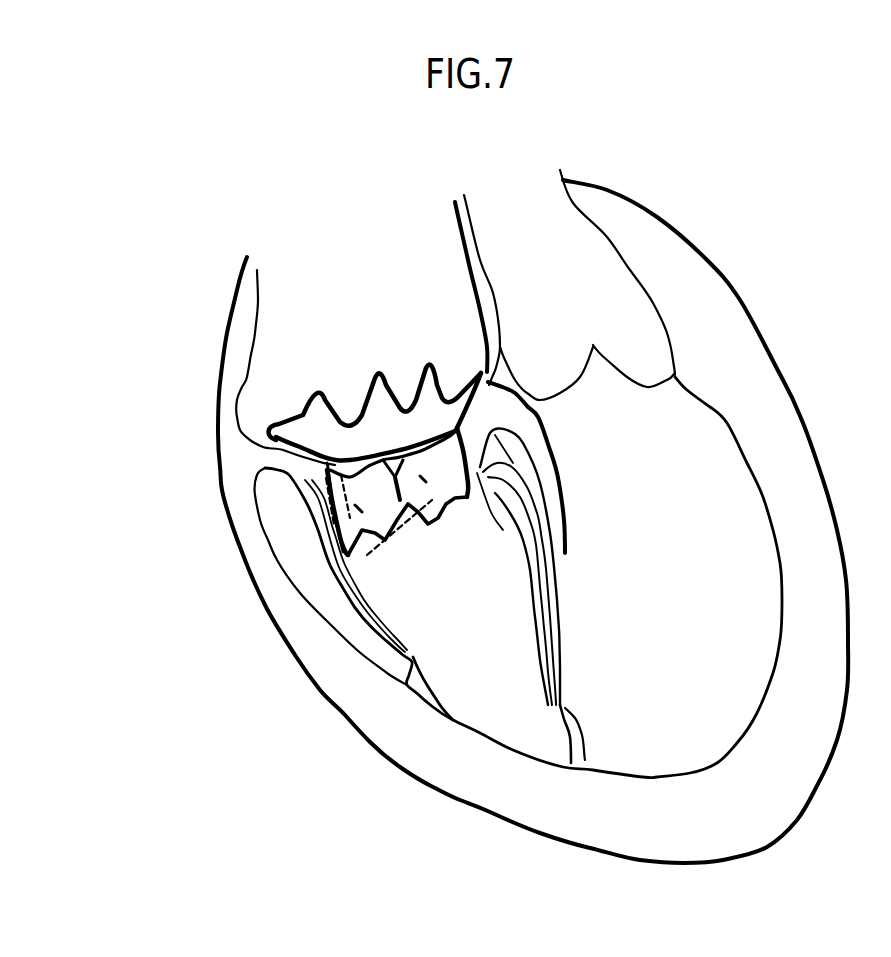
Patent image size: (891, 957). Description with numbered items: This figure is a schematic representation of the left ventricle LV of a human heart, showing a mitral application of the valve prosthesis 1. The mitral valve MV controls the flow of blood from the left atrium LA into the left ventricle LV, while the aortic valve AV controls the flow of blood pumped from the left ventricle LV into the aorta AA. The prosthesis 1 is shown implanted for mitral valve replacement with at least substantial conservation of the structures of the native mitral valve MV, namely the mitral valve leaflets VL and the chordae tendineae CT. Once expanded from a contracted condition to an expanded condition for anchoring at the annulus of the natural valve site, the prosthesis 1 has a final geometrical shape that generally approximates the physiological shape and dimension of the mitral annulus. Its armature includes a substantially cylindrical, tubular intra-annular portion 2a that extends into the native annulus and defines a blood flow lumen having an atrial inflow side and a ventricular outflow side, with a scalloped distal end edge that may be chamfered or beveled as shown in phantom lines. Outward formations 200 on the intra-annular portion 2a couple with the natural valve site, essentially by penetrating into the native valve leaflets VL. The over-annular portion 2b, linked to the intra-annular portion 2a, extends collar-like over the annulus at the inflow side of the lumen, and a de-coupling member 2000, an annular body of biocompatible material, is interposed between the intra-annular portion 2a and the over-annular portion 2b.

The valve prosthesis 1 is at (360, 442).
The intra-annular portion 2a is at (460, 426).
The over-annular portion 2b is at (458, 355).
The outward formations 200 is at (357, 498).
The de-coupling member 2000 is at (357, 450).
The left atrium LA is at (302, 342).
The left ventricle LV is at (805, 470).
The aorta AA is at (603, 257).
The aortic valve AV is at (606, 400).
The mitral valve leaflets VL is at (478, 470).
The chordae tendineae CT is at (403, 605).
The mitral valve MV is at (397, 640).